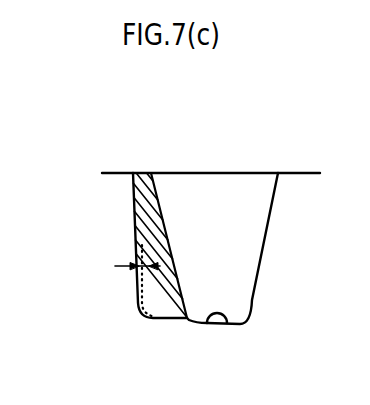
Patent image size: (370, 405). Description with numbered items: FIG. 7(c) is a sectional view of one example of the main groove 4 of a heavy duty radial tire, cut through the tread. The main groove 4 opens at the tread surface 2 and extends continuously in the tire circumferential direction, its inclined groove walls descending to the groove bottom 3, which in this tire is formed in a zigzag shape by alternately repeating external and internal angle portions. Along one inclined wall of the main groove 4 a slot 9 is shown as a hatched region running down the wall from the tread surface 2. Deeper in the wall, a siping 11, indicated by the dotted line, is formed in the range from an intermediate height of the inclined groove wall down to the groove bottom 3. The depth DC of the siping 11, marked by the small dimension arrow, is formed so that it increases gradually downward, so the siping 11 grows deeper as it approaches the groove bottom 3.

The tread surface 2 is at (288, 173).
The groove bottom 3 is at (207, 323).
The main groove 4 is at (207, 210).
The slot 9 is at (158, 197).
The siping 11 is at (138, 289).
The depth of the siping DC is at (138, 255).